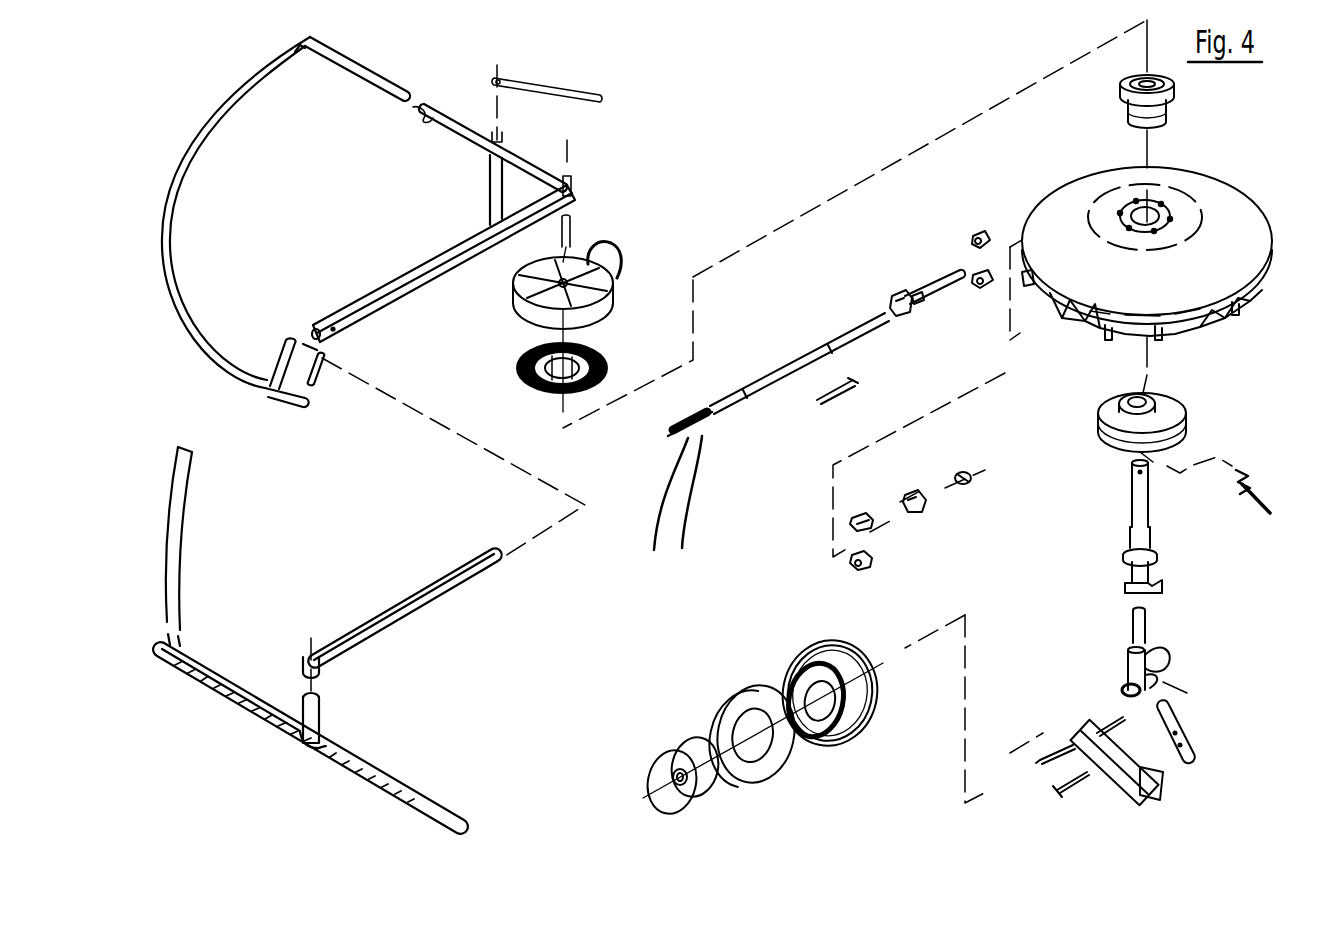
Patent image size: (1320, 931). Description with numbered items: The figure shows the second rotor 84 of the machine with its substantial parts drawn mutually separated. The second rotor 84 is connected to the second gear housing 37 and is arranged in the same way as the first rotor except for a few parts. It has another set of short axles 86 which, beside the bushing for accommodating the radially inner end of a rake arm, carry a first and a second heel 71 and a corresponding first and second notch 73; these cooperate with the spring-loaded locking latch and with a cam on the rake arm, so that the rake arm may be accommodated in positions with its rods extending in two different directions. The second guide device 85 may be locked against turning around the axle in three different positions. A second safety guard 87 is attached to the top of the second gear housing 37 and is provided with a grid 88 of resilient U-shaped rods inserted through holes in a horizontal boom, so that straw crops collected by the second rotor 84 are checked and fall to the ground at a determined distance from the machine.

The second gear housing 37 is at (607, 300).
The heel 71 is at (922, 298).
The notch 73 is at (899, 293).
The second rotor 84 is at (1236, 144).
The second guide device 85 is at (1100, 404).
The short axles 86 is at (942, 277).
The second safety guard 87 is at (176, 181).
The grid 88 is at (230, 700).